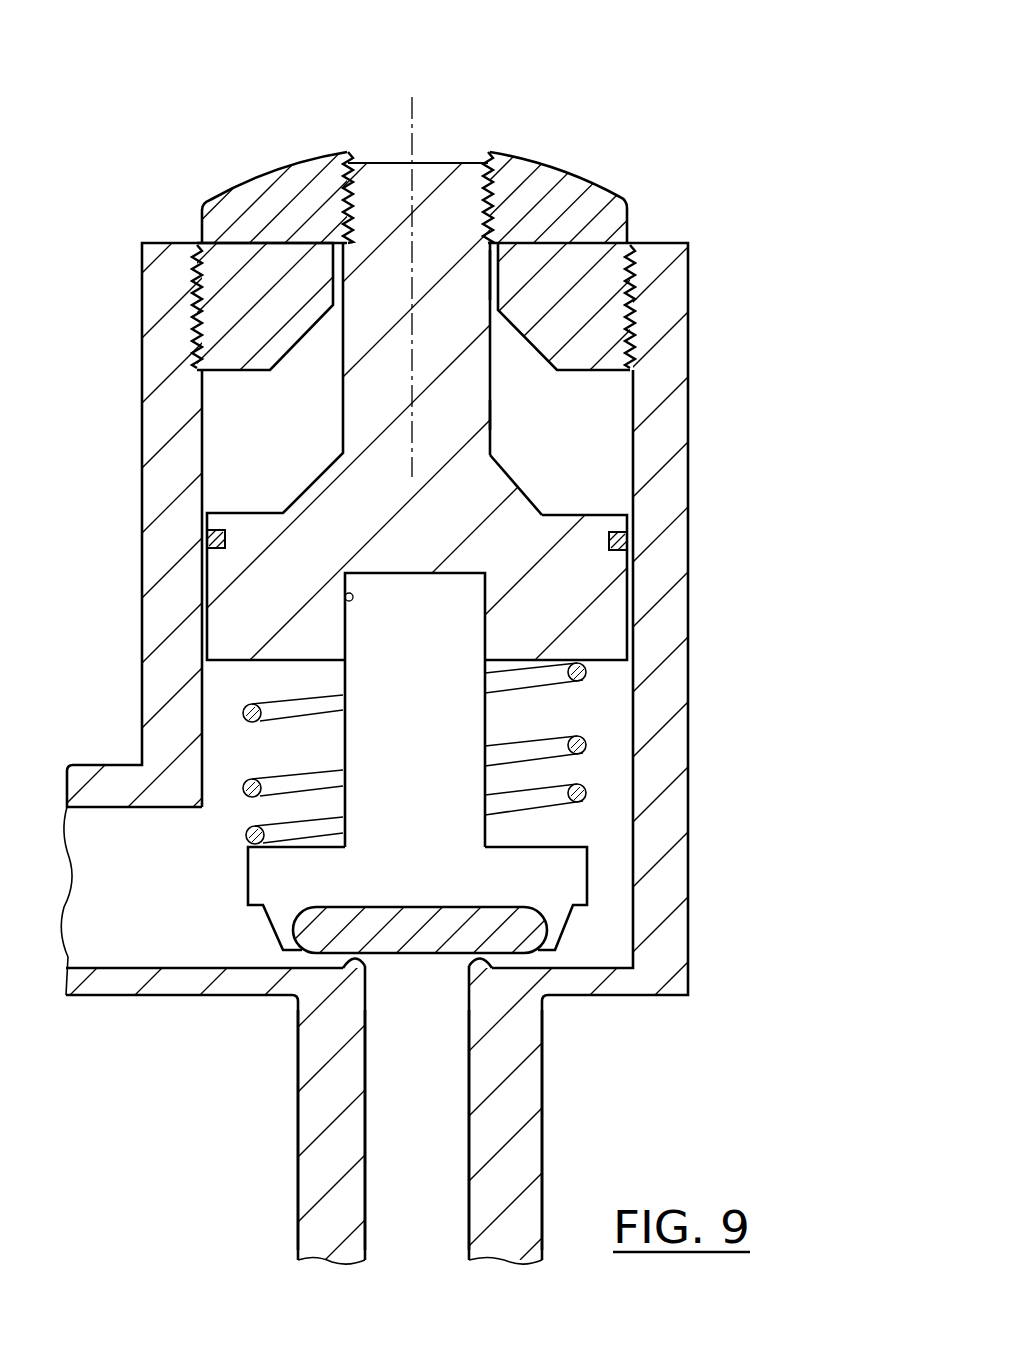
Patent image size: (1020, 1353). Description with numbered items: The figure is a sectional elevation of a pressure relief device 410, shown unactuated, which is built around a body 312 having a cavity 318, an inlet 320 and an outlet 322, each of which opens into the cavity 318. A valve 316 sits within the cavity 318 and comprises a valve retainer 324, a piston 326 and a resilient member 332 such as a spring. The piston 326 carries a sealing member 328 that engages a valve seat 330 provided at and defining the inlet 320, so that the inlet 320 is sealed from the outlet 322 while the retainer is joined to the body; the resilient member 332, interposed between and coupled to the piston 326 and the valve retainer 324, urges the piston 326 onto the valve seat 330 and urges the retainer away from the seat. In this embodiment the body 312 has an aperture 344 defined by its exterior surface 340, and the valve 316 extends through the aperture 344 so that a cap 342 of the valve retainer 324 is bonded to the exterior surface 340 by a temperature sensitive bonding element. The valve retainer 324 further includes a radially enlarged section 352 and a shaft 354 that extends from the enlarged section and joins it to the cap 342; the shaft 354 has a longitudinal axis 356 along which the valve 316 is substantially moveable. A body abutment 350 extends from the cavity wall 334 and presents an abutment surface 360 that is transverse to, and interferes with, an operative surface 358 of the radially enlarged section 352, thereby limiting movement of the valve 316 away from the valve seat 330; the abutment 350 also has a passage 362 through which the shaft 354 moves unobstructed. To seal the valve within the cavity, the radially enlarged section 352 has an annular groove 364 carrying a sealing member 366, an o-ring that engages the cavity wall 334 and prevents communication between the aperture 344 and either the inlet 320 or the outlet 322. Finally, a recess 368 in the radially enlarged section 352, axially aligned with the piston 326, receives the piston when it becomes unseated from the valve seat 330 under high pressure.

The pressure relief device 410 is at (740, 522).
The body 312 is at (165, 405).
The valve 316 is at (462, 147).
The cavity 318 is at (270, 497).
The inlet 320 is at (440, 1114).
The outlet 322 is at (150, 906).
The valve retainer 324 is at (207, 178).
The piston 326 is at (440, 768).
The sealing member 328 is at (495, 933).
The valve seat 330 is at (365, 960).
The resilient member 332 is at (553, 797).
The cavity wall 334 is at (200, 463).
The exterior surface 340 is at (630, 240).
The cap 342 is at (553, 178).
The aperture 344 is at (488, 258).
The body abutment 350 is at (218, 320).
The radially enlarged section 352 is at (580, 611).
The shaft 354 is at (490, 413).
The longitudinal axis 356 is at (410, 115).
The operative surface 358 is at (533, 497).
The abutment surface 360 is at (297, 360).
The passage 362 is at (500, 318).
The annular groove 364 is at (607, 538).
The sealing member 366 is at (203, 538).
The recess 368 is at (345, 597).